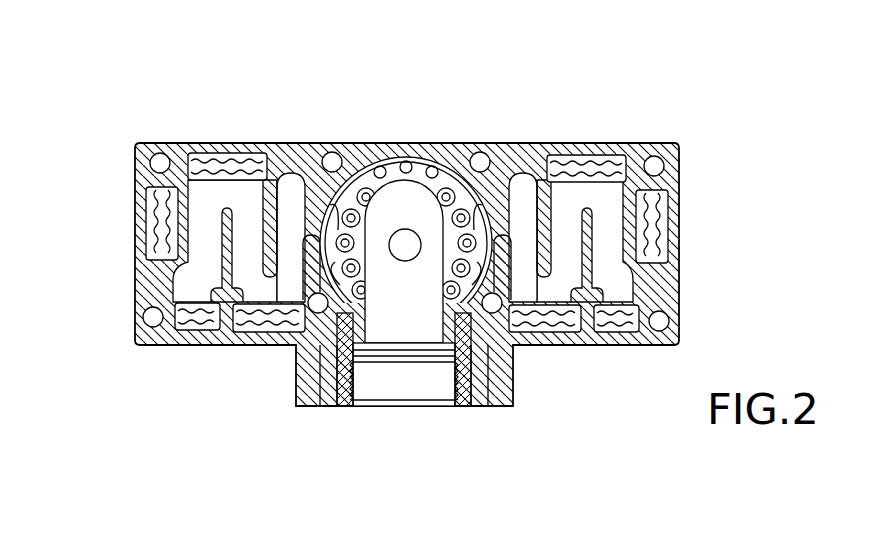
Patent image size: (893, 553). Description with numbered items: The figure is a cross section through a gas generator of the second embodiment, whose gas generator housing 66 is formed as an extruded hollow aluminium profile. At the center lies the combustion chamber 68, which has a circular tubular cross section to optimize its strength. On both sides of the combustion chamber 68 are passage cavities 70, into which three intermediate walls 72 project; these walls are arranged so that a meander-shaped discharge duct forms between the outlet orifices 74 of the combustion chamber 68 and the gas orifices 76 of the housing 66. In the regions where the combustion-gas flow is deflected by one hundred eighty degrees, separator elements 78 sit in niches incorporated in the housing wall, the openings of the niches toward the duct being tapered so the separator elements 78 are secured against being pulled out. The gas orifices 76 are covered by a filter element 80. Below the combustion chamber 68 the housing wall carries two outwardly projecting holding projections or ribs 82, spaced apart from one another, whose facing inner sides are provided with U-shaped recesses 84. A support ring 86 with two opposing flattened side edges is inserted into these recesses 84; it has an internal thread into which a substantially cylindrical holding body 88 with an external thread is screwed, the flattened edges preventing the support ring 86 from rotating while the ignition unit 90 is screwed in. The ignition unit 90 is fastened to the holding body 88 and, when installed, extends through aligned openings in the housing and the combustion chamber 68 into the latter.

The gas generator housing 66 is at (299, 110).
The combustion chamber 68 is at (388, 160).
The passage cavities 70 is at (243, 190).
The intermediate walls 72 is at (220, 290).
The outlet orifices 74 is at (300, 172).
The gas orifices 76 is at (141, 229).
The separator elements 78 is at (210, 153).
The filter element 80 is at (142, 206).
The holding projections or ribs 82 is at (297, 376).
The U-shaped recesses 84 is at (297, 393).
The support ring 86 is at (316, 407).
The holding body 88 is at (465, 408).
The ignition unit 90 is at (384, 416).